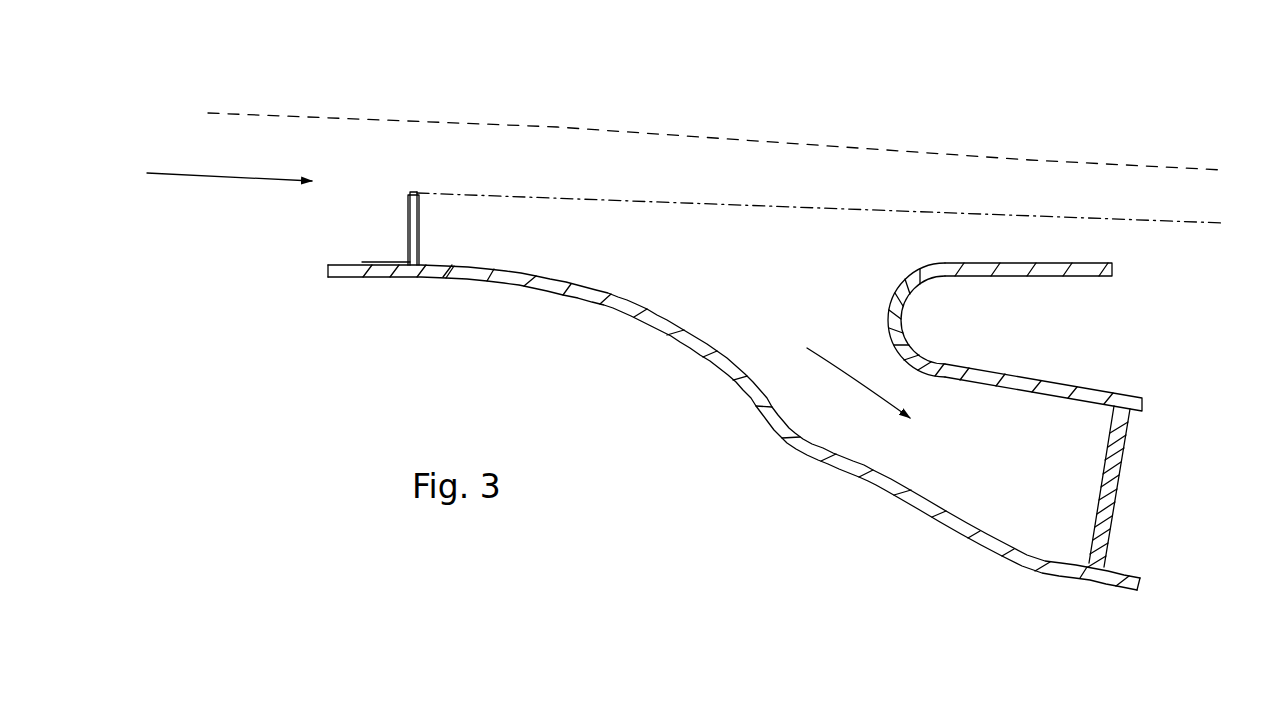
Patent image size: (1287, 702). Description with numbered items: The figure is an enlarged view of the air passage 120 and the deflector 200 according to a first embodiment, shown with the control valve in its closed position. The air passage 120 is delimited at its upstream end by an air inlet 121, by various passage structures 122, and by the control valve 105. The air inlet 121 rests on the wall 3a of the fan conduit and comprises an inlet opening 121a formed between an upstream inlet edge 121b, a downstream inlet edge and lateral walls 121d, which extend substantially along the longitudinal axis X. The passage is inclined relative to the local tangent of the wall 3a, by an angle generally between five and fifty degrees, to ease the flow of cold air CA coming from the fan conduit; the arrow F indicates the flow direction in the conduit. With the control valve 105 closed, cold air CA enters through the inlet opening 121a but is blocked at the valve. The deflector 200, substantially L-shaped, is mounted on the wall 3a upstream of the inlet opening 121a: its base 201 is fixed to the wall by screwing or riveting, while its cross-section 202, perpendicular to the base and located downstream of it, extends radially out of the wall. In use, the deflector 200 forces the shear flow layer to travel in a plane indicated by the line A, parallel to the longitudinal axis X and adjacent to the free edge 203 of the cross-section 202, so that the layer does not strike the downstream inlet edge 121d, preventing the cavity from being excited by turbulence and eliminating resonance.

The wall of the fan conduit 3a is at (354, 265).
The control valve 105 is at (1127, 467).
The air passage 120 is at (1140, 362).
The air inlet 121 is at (812, 260).
The inlet opening 121a is at (719, 287).
The upstream inlet edge 121b is at (462, 265).
The lateral walls 121d is at (928, 262).
The passage structures 122 is at (775, 425).
The deflector 200 is at (396, 192).
The base 201 is at (388, 275).
The cross-section of the L 202 is at (418, 194).
The free edge 203 is at (415, 192).
The line A is at (1187, 222).
The longitudinal axis X is at (1178, 167).
The flow direction F is at (229, 163).
The cold air CA is at (857, 392).